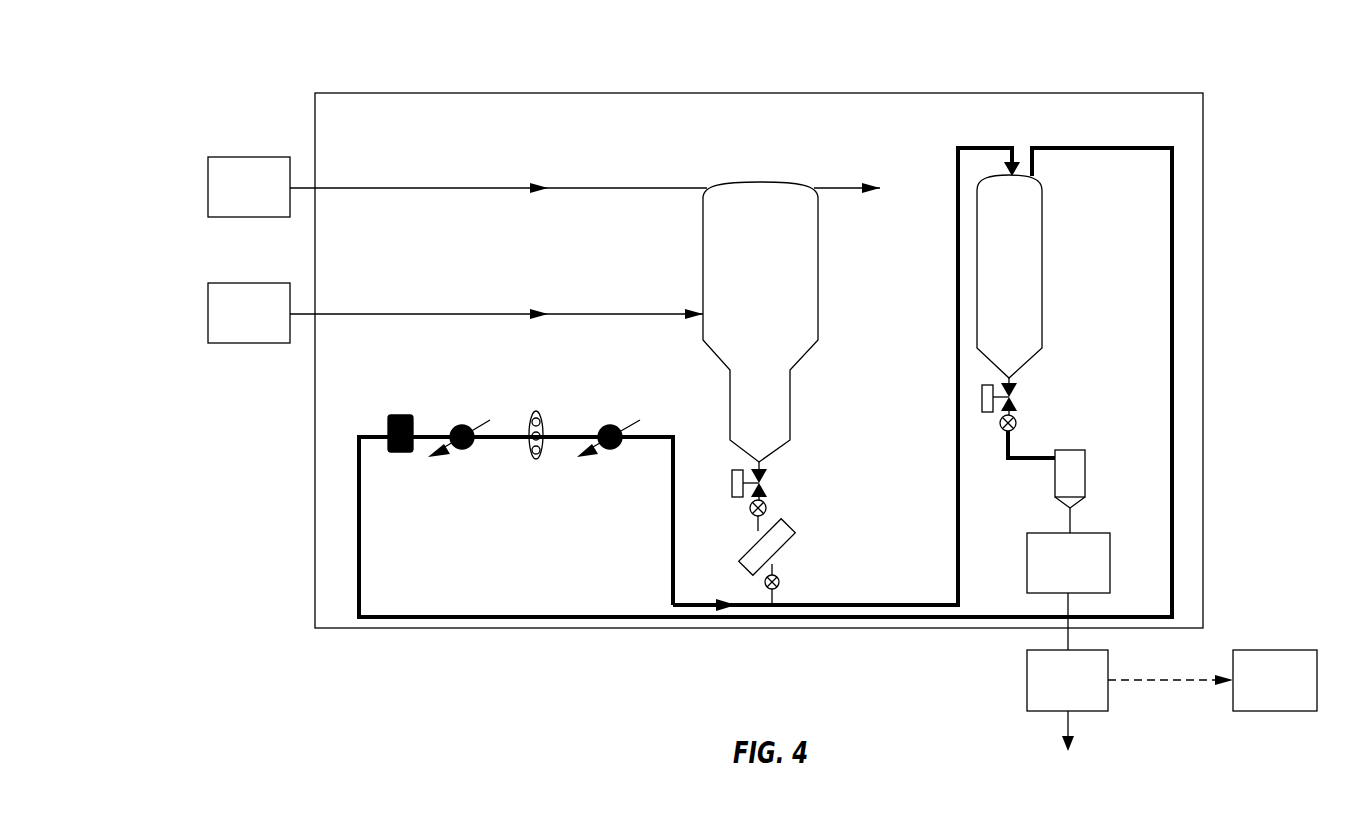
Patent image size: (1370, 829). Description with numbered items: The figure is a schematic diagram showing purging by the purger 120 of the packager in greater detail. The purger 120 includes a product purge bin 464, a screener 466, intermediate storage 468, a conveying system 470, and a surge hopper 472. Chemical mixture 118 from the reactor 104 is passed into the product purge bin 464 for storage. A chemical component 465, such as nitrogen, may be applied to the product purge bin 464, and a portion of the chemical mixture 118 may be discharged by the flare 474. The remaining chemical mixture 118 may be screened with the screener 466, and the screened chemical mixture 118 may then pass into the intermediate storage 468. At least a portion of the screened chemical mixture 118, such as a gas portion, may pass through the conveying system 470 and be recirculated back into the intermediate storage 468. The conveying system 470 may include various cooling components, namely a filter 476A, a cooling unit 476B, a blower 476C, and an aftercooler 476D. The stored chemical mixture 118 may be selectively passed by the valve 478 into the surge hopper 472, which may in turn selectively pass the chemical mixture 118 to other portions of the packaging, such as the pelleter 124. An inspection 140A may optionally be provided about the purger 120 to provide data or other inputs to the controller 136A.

The reactor 104 is at (266, 201).
The chemical mixture 118 is at (338, 187).
The purger 120 is at (958, 82).
The pelleter 124 is at (1086, 577).
The controller 136A is at (1299, 694).
The inspection 140A is at (1091, 694).
The product purge bin 464 is at (777, 322).
The chemical component 465 is at (266, 329).
The screener 466 is at (792, 528).
The intermediate storage 468 is at (1027, 281).
The conveying system 470 is at (357, 578).
The surge hopper 472 is at (1087, 477).
The flare 474 is at (846, 187).
The filter 476A is at (400, 414).
The cooling unit 476B is at (462, 424).
The blower 476C is at (538, 459).
The aftercooler 476D is at (610, 424).
The valve 478 is at (1017, 424).